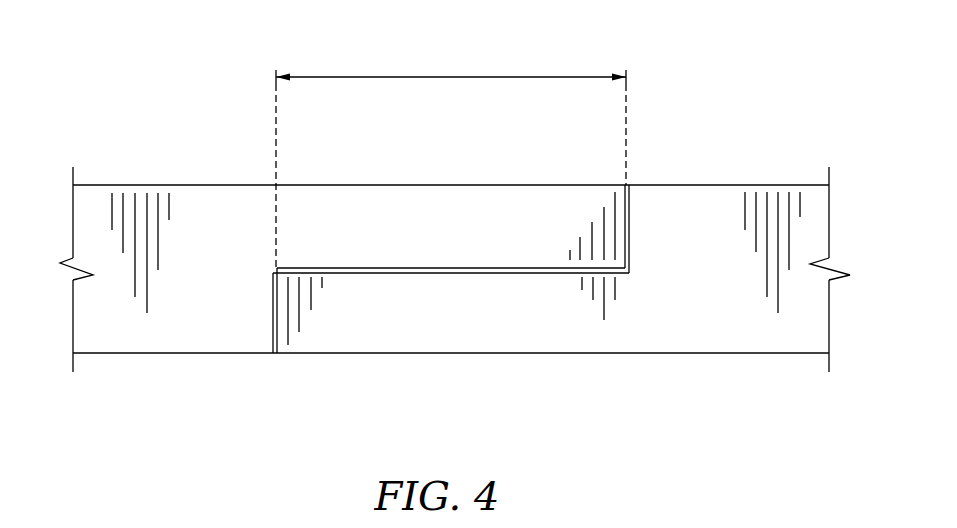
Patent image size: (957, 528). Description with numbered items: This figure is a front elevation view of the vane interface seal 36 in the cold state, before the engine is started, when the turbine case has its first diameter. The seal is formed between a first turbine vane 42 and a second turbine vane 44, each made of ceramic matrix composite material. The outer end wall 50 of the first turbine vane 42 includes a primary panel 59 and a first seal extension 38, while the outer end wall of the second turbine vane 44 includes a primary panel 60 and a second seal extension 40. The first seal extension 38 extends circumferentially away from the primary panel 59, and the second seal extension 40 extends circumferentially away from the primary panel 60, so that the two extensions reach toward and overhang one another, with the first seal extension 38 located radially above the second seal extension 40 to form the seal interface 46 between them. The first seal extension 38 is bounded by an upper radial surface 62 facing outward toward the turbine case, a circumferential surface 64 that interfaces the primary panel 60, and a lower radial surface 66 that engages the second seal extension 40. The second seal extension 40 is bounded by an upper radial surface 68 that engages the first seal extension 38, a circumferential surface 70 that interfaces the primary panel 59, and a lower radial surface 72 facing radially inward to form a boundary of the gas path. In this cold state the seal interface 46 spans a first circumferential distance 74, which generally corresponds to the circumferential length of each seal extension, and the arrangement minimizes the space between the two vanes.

The vane interface seal 36 is at (445, 75).
The first seal extension 38 is at (452, 190).
The second seal extension 40 is at (451, 347).
The first turbine vane 42 is at (218, 88).
The second turbine vane 44 is at (677, 395).
The seal interface 46 is at (423, 308).
The outer end wall 50 is at (165, 122).
The primary panel 59 is at (195, 207).
The primary panel 60 is at (707, 330).
The upper radial surface 62 is at (435, 185).
The circumferential surface 64 is at (627, 220).
The lower radial surface 66 is at (447, 268).
The upper radial surface 68 is at (517, 271).
The circumferential surface 70 is at (273, 308).
The lower radial surface 72 is at (370, 353).
The first circumferential distance 74 is at (520, 75).